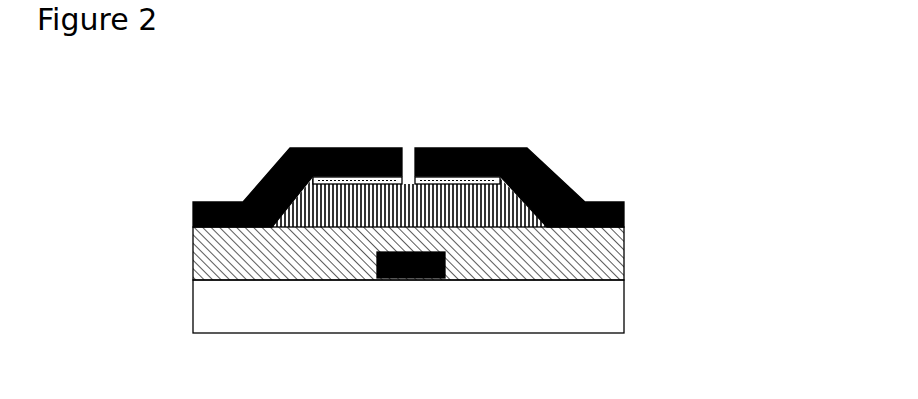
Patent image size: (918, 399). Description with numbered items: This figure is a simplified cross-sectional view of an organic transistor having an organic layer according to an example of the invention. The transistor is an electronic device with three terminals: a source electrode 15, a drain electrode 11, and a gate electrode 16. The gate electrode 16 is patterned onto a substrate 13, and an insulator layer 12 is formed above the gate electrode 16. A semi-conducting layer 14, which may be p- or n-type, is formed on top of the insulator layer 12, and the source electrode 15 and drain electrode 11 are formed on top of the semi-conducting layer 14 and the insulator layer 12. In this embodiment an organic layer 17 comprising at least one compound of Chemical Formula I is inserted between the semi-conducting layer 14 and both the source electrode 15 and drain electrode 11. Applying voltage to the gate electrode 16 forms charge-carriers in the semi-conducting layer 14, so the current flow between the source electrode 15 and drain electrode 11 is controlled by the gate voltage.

The drain electrode 11 is at (600, 214).
The insulator layer 12 is at (600, 257).
The substrate 13 is at (596, 305).
The semi-conducting layer 14 is at (340, 198).
The source electrode 15 is at (205, 217).
The gate electrode 16 is at (402, 265).
The organic layer 17 is at (425, 181).